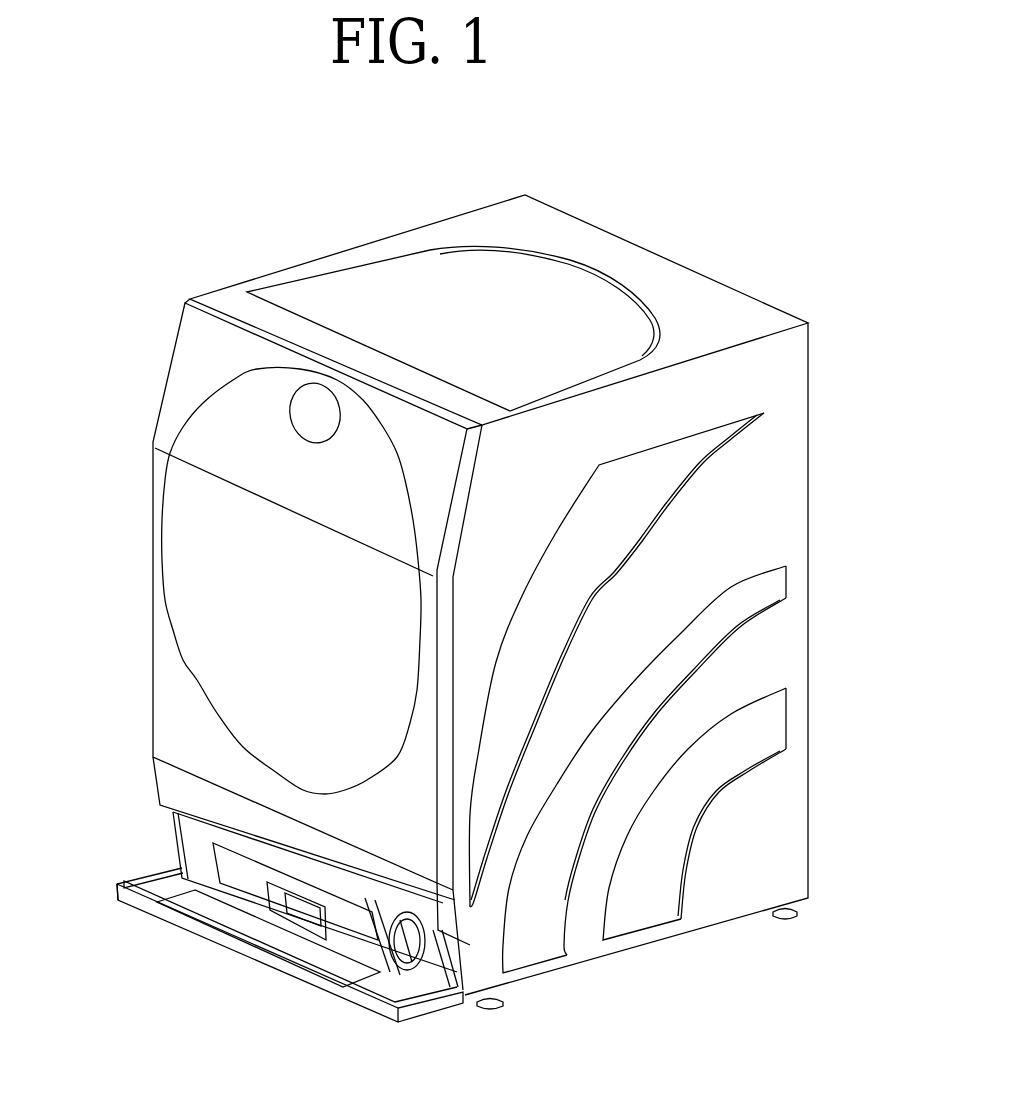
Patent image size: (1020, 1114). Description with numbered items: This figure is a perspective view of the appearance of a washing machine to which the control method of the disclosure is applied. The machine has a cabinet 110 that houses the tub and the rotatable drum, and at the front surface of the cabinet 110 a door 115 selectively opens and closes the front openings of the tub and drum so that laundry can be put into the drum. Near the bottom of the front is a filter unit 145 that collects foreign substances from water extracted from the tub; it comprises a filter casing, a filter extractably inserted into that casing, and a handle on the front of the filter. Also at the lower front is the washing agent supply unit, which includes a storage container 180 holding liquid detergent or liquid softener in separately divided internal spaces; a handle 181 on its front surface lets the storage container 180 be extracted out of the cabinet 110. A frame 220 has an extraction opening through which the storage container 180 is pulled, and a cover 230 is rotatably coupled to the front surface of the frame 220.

The cabinet 110 is at (507, 218).
The door 115 is at (195, 576).
The filter unit 145 is at (400, 958).
The storage container 180 is at (250, 883).
The handle 181 is at (310, 913).
The frame 220 is at (193, 835).
The cover 230 is at (137, 913).